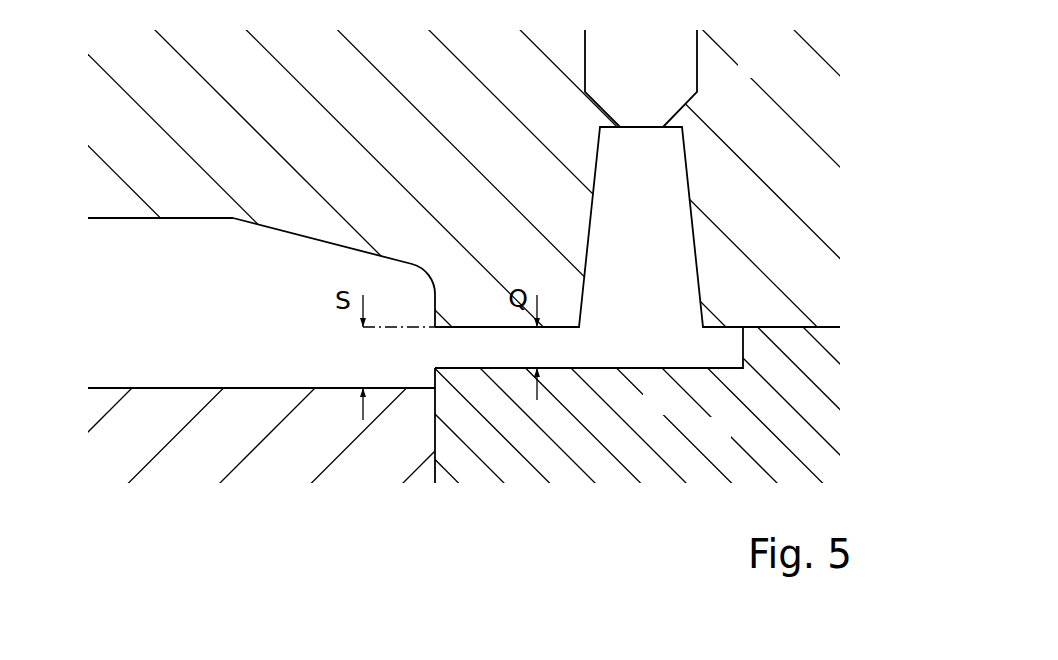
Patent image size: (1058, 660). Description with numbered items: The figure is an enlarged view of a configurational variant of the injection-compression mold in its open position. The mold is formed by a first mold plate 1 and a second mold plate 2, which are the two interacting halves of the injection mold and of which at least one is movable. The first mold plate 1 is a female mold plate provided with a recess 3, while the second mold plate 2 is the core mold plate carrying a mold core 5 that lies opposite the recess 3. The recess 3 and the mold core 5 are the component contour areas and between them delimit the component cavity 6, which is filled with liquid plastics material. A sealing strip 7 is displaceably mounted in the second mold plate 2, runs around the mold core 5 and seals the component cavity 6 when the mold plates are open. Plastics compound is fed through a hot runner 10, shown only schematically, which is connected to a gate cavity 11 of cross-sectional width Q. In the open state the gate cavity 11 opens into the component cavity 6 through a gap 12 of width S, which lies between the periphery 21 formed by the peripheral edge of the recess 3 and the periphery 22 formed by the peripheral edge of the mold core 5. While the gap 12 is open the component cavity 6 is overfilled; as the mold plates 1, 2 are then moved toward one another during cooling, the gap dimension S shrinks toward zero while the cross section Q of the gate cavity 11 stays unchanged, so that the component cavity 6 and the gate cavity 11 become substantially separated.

The first mold plate 1 is at (172, 96).
The second mold plate 2 is at (197, 461).
The recess 3 is at (166, 218).
The mold core 5 is at (311, 388).
The component cavity 6 is at (217, 230).
The sealing strip 7 is at (712, 444).
The hot runner 10 is at (697, 63).
The gate cavity 11 is at (655, 355).
The gap 12 is at (385, 352).
The periphery of the recess 21 is at (435, 318).
The periphery of the mold core 22 is at (433, 390).